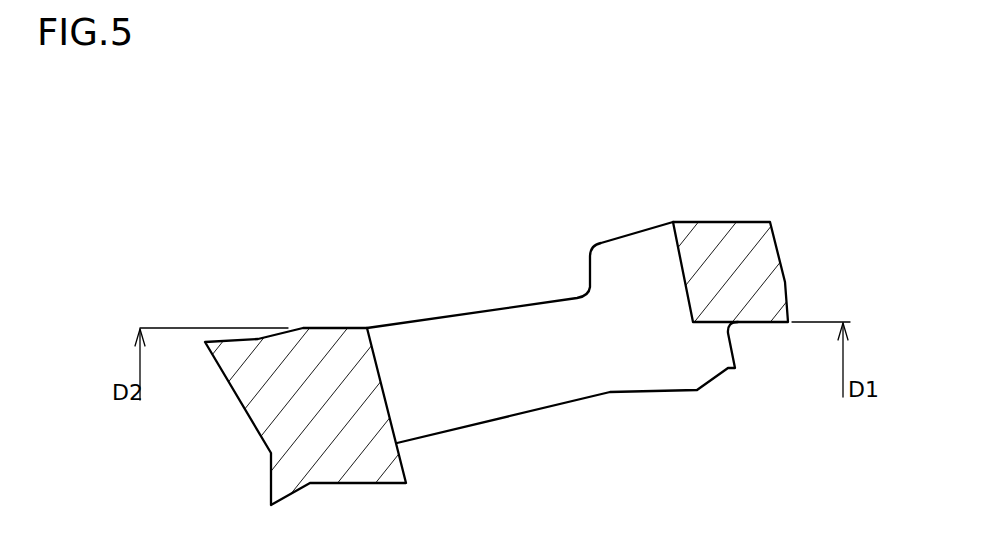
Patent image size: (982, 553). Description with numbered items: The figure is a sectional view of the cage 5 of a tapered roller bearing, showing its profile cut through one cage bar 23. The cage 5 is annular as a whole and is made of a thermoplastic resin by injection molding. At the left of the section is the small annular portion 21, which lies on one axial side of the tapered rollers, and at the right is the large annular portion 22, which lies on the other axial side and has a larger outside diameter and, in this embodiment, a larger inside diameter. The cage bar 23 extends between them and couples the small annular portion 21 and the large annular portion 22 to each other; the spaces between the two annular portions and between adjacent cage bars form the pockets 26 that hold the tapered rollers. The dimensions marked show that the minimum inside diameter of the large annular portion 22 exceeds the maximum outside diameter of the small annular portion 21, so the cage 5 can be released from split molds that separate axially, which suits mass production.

The cage 5 is at (472, 335).
The small annular portion 21 is at (333, 343).
The large annular portion 22 is at (740, 247).
The cage bar 23 is at (653, 393).
The pocket 26 is at (498, 307).